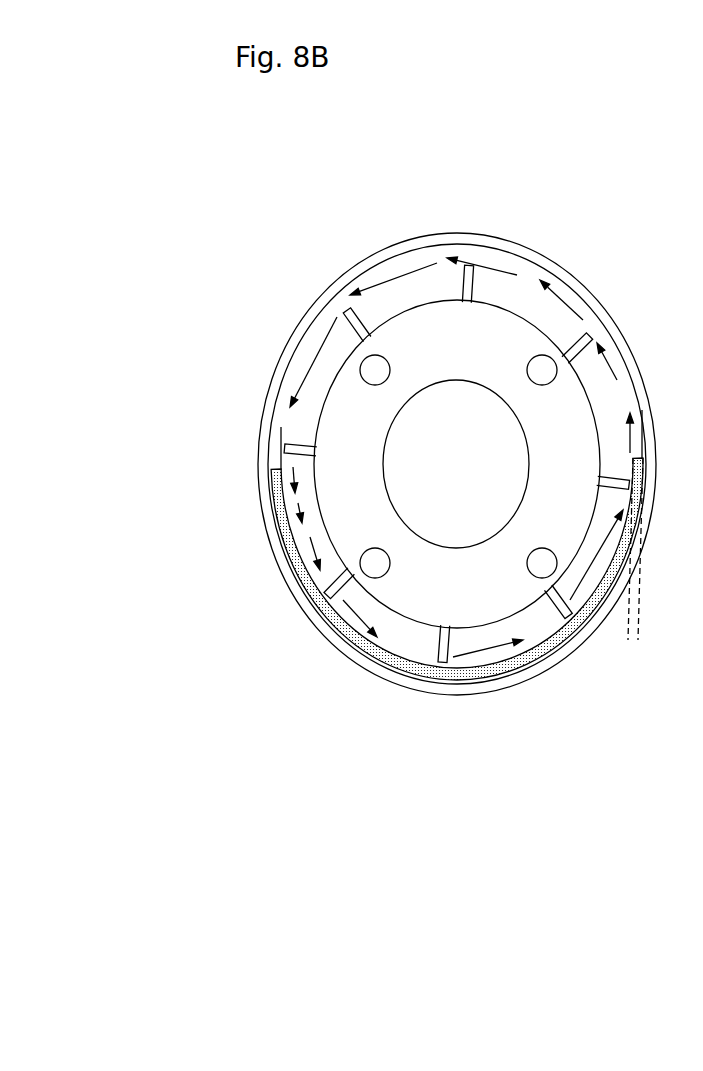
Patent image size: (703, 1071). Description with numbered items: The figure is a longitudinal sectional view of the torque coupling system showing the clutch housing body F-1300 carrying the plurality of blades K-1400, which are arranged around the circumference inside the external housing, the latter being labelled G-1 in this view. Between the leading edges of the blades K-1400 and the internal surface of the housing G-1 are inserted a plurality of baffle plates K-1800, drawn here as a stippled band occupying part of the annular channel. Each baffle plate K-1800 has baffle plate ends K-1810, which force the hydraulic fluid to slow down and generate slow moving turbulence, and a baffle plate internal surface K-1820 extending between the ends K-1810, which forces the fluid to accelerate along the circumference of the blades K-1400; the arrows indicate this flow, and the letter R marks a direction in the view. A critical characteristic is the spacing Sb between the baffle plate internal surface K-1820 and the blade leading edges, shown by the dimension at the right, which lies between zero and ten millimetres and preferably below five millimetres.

The clutch housing body F-1300 is at (339, 252).
The plurality of blades K-1400 is at (337, 330).
The housing G-1 is at (687, 237).
The radial direction R is at (689, 363).
The plurality of baffle plates K-1800 is at (584, 632).
The baffle plate ends K-1810 is at (630, 453).
The baffle plate internal surface K-1820 is at (408, 663).
The spacing Sb is at (600, 632).